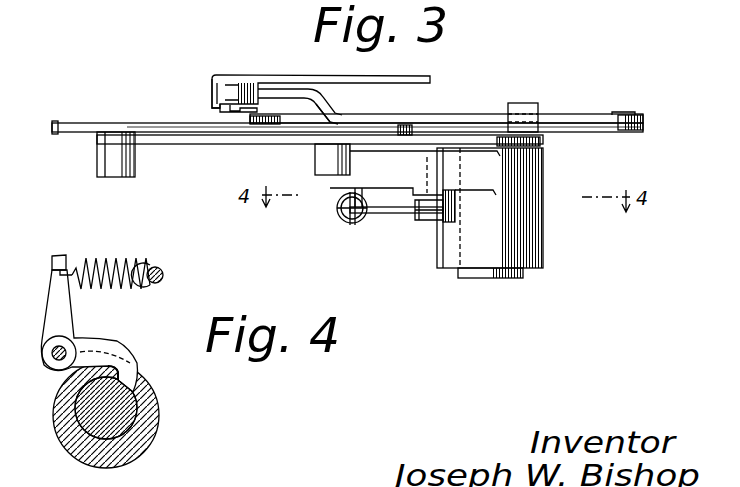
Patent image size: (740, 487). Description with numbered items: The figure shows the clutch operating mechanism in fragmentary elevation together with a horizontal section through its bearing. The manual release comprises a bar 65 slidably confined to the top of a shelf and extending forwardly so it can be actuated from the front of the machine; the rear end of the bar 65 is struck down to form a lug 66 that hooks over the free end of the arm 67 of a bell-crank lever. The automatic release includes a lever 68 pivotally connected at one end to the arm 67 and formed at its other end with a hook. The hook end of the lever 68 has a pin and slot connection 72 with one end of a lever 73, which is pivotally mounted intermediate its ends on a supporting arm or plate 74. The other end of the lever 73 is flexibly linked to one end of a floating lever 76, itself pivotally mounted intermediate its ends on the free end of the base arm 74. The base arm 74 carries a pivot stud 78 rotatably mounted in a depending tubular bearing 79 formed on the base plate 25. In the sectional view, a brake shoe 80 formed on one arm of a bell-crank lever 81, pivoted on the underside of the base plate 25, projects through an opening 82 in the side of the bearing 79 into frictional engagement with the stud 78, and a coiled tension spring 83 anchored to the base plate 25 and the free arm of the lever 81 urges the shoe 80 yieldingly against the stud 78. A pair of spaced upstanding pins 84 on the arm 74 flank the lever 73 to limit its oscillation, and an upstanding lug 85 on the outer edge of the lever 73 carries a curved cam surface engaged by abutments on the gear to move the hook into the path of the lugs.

In FIG. 3, the base plate 25 is at (338, 180).
In FIG. 3, the bar 65 is at (292, 74).
In FIG. 3, the lug 66 is at (212, 96).
In FIG. 3, the arm 67 is at (259, 93).
In FIG. 3, the lever 68 is at (332, 114).
In FIG. 3, the pin and slot connection 72 is at (625, 112).
In FIG. 3, the lever 73 is at (584, 132).
In FIG. 3, the supporting arm 74 is at (193, 145).
In FIG. 3, the floating lever 76 is at (165, 123).
In FIG. 3, the pivot stud 78 is at (489, 279).
In FIG. 4, the pivot stud 78 is at (123, 415).
In FIG. 3, the tubular bearing 79 is at (497, 253).
In FIG. 4, the tubular bearing 79 is at (147, 437).
In FIG. 4, the brake shoe 80 is at (127, 373).
In FIG. 3, the bell-crank lever 81 is at (401, 214).
In FIG. 4, the bell-crank lever 81 is at (88, 341).
In FIG. 4, the opening 82 is at (143, 377).
In FIG. 3, the coiled tension spring 83 is at (349, 223).
In FIG. 4, the coiled tension spring 83 is at (133, 263).
In FIG. 3, the upstanding pins 84 is at (408, 125).
In FIG. 3, the upstanding lug 85 is at (526, 104).